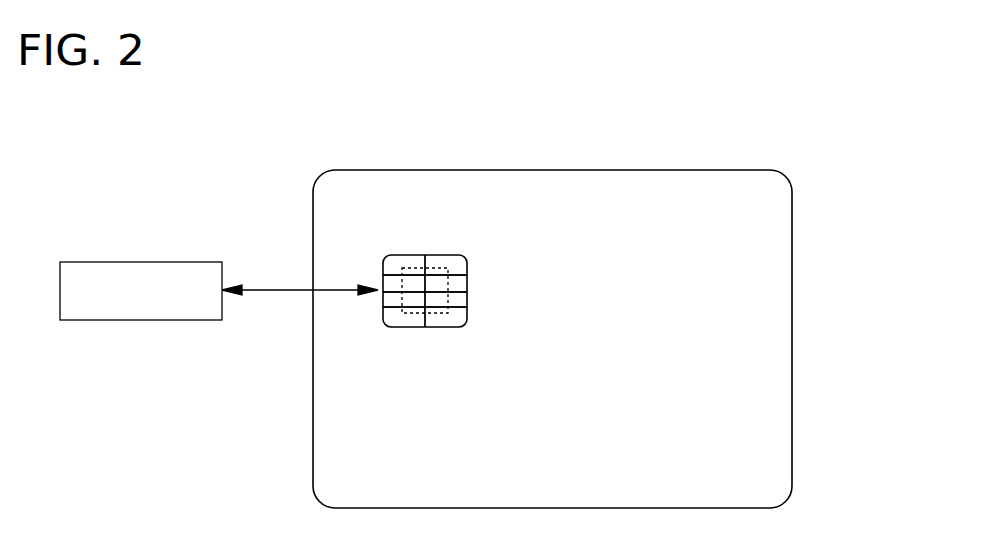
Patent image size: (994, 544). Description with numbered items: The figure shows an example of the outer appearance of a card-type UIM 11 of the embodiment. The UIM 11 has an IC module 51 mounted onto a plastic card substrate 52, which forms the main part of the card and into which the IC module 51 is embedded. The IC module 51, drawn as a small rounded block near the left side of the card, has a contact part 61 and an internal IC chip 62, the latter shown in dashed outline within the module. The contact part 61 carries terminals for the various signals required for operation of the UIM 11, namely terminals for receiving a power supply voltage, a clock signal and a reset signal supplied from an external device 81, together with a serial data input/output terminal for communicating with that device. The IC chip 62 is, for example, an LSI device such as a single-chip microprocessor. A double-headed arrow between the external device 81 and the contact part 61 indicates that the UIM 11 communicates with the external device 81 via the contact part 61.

The UIM 11 is at (685, 170).
The IC module 51 is at (447, 253).
The card substrate 52 is at (778, 445).
The contact part 61 is at (457, 315).
The IC chip 62 is at (433, 318).
The external device 81 is at (178, 262).